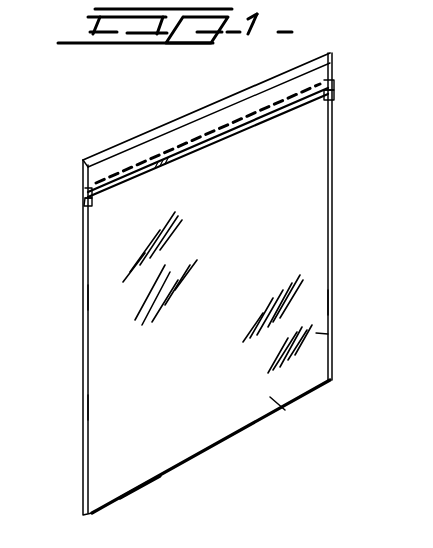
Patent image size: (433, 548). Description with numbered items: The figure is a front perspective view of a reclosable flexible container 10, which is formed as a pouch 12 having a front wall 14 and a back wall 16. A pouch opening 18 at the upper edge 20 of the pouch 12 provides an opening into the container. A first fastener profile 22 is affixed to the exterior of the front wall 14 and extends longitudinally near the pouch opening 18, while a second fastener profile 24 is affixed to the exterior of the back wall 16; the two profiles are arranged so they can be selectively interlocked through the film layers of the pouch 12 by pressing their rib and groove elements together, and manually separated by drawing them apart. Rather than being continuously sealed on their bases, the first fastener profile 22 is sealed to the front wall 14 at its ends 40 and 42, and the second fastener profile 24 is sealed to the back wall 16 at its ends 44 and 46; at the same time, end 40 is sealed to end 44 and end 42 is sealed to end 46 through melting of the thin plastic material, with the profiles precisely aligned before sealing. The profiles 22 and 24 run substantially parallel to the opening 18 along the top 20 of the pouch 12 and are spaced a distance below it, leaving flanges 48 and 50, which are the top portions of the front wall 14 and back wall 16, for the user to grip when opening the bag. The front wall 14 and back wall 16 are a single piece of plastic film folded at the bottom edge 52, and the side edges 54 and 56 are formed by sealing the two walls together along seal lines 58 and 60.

The reclosable flexible container 10 is at (352, 153).
The pouch 12 is at (332, 367).
The front wall 14 is at (280, 408).
The back wall 16 is at (104, 458).
The pouch opening 18 is at (107, 150).
The upper edge 20 is at (83, 160).
The first fastener profile 22 is at (225, 143).
The second fastener profile 24 is at (252, 112).
The end 40 is at (84, 205).
The end 42 is at (333, 96).
The end 44 is at (84, 193).
The end 46 is at (331, 82).
The flange 48 is at (147, 150).
The flange 50 is at (195, 111).
The bottom edge 52 is at (137, 488).
The side edge 54 is at (83, 408).
The side edge 56 is at (316, 333).
The seal line 58 is at (83, 295).
The seal line 60 is at (332, 298).